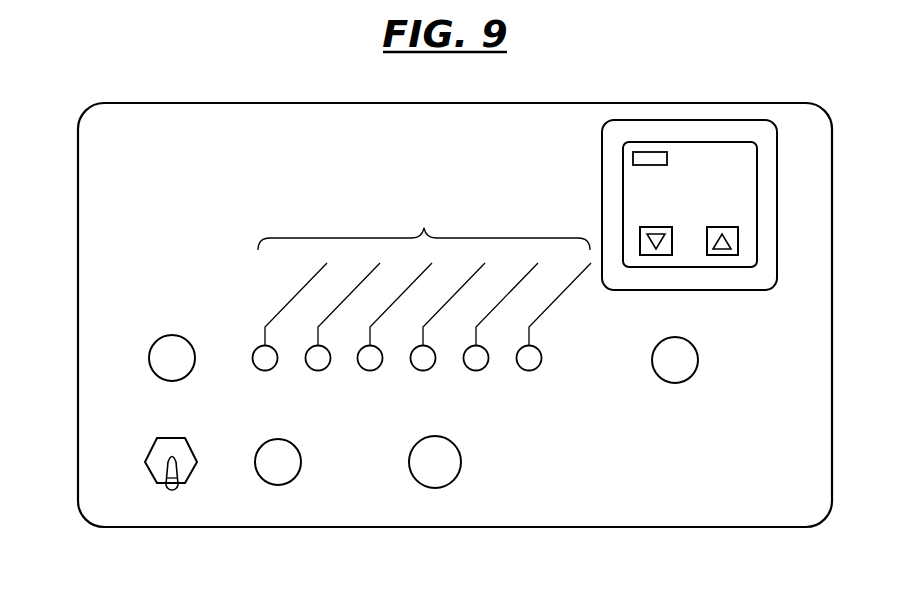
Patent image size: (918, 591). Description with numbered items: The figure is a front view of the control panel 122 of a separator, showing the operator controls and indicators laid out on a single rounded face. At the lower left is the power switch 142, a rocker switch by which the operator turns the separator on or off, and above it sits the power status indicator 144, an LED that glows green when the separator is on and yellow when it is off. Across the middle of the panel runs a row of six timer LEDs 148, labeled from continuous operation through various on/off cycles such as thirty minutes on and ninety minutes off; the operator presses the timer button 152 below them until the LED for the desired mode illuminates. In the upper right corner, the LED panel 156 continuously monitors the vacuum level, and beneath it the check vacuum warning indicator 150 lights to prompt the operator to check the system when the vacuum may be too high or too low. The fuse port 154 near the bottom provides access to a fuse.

The control panel 122 is at (170, 128).
The LED panel 156 is at (700, 168).
The timer LEDs 148 is at (422, 284).
The power status indicator 144 is at (160, 367).
The power switch 142 is at (150, 468).
The timer button 152 is at (290, 470).
The fuse port 154 is at (438, 480).
The warning indicator 150 is at (685, 368).